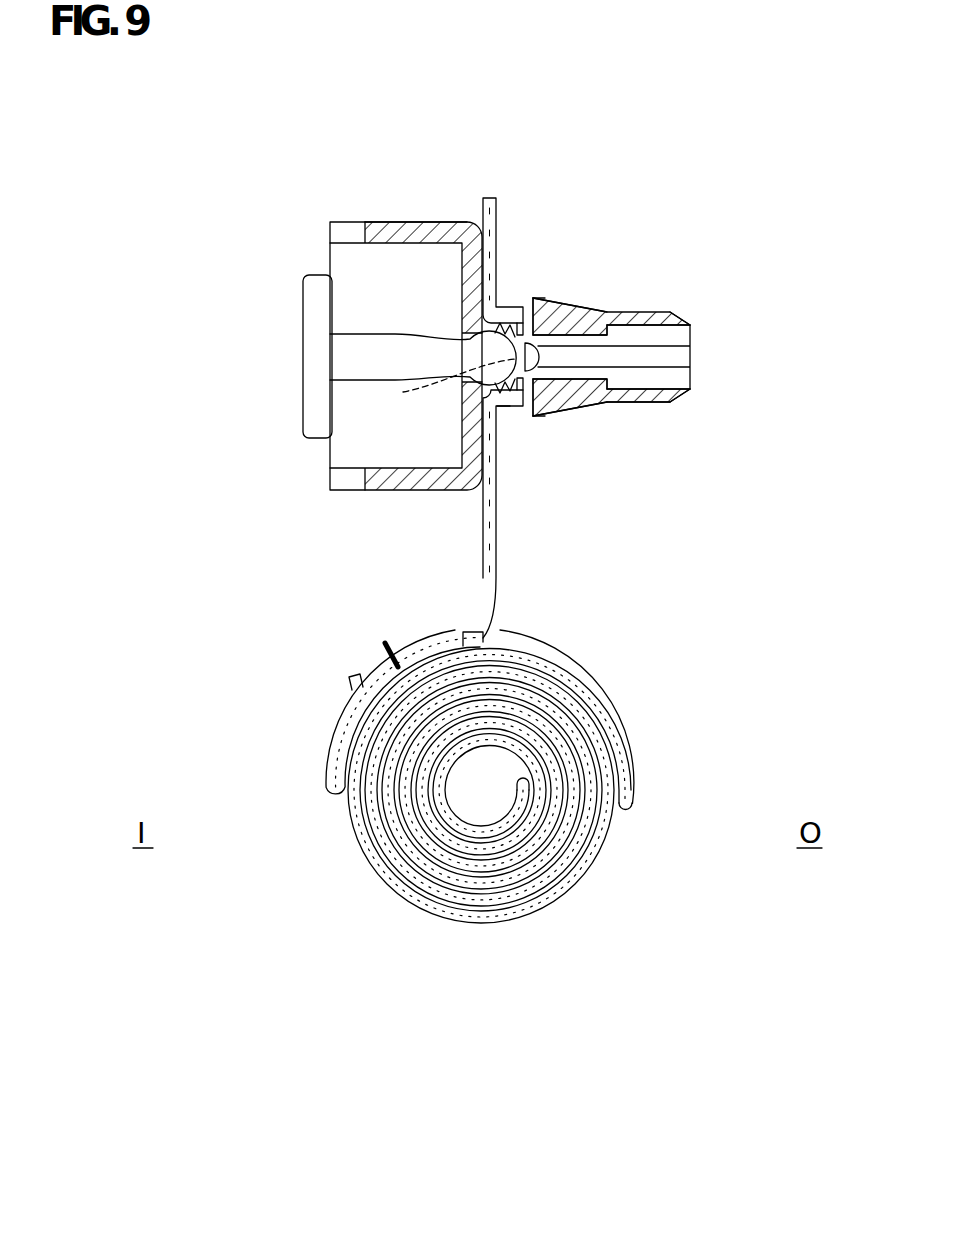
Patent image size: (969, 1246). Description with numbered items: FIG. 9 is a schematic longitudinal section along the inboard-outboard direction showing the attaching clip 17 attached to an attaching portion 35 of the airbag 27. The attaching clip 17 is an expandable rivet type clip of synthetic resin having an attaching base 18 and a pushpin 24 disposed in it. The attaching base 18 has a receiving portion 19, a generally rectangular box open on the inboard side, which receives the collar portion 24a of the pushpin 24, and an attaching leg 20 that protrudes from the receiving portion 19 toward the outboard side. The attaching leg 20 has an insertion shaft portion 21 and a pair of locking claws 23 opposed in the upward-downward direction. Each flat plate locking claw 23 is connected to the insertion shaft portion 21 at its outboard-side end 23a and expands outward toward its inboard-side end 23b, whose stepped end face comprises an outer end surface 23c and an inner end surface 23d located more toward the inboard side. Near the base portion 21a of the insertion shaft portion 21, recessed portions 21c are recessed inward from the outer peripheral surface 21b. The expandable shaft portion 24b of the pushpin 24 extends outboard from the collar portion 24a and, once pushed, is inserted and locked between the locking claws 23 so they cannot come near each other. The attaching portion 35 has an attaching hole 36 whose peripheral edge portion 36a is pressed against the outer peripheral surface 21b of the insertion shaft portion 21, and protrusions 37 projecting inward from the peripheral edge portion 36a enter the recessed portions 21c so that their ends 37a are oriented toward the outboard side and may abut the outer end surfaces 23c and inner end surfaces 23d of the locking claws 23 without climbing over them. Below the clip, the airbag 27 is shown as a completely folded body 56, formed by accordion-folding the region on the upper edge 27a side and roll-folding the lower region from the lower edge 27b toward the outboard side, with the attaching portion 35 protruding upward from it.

The attaching clip 17 is at (284, 531).
The attaching base 18 is at (373, 509).
The receiving portion 19 is at (432, 222).
The attaching leg 20 is at (728, 350).
The insertion shaft portion 21 is at (694, 414).
The base portion 21a is at (509, 276).
The outer peripheral surface 21b is at (655, 312).
The recessed portions 21c is at (528, 317).
The locking claws 23 is at (610, 311).
The outboard-side ends 23a is at (607, 397).
The inboard-side ends 23b is at (565, 415).
The outer end surface 23c is at (604, 294).
The inner end surface 23d is at (545, 298).
The pushpin 24 is at (267, 424).
The collar portion 24a is at (315, 357).
The expandable shaft portion 24b is at (466, 350).
The airbag 27 is at (431, 965).
The upper edge 27a is at (483, 634).
The lower edge 27b is at (518, 800).
The attaching portion 35 is at (480, 540).
The attaching hole 36 is at (444, 389).
The peripheral edge portion 36a is at (503, 407).
The protrusions 37 is at (506, 307).
The ends 37a is at (498, 330).
The completely folded body 56 is at (480, 776).